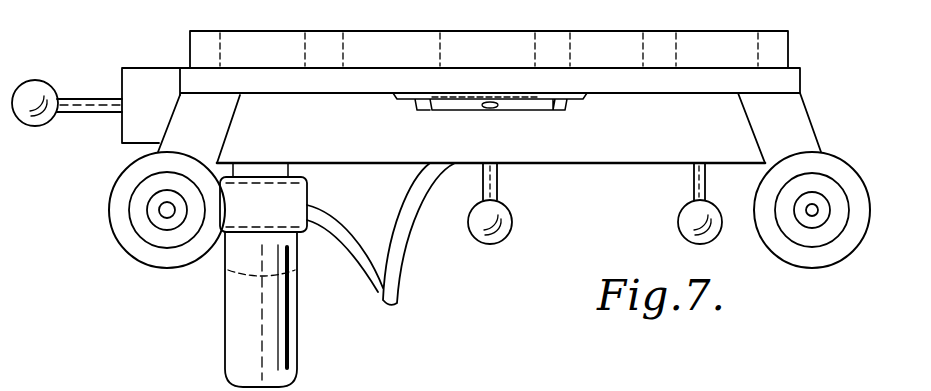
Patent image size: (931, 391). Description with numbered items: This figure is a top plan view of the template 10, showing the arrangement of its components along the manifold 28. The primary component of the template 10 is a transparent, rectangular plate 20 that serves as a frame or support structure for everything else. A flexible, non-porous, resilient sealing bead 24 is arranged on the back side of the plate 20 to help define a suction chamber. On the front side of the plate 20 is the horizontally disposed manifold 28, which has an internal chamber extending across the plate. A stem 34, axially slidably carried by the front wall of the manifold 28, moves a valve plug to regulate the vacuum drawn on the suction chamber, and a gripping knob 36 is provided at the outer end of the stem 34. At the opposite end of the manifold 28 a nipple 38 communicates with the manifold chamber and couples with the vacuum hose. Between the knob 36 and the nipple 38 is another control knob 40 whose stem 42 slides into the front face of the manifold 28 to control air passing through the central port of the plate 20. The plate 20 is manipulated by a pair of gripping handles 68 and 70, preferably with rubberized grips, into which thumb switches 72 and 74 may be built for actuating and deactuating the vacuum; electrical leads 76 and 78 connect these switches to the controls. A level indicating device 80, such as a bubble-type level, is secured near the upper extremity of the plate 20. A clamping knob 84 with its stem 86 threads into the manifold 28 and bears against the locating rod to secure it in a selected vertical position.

The template 10 is at (74, 203).
The plate 20 is at (790, 80).
The sealing bead 24 is at (745, 47).
The manifold 28 is at (574, 165).
The stem 34 is at (696, 183).
The gripping knob 36 is at (685, 218).
The nipple 38 is at (305, 197).
The control knob 40 is at (483, 228).
The stem 42 is at (498, 178).
The gripping handle 68 is at (163, 262).
The gripping handle 70 is at (785, 258).
The thumb switch 72 is at (168, 212).
The thumb switch 74 is at (815, 205).
The electrical lead 76 is at (362, 252).
The electrical lead 78 is at (401, 212).
The level indicating device 80 is at (507, 103).
The clamping knob 84 is at (32, 113).
The stem 86 is at (77, 97).